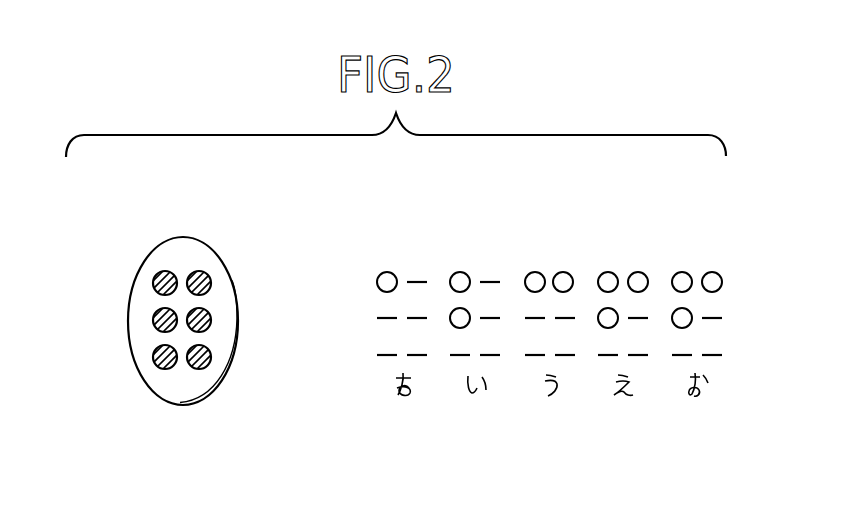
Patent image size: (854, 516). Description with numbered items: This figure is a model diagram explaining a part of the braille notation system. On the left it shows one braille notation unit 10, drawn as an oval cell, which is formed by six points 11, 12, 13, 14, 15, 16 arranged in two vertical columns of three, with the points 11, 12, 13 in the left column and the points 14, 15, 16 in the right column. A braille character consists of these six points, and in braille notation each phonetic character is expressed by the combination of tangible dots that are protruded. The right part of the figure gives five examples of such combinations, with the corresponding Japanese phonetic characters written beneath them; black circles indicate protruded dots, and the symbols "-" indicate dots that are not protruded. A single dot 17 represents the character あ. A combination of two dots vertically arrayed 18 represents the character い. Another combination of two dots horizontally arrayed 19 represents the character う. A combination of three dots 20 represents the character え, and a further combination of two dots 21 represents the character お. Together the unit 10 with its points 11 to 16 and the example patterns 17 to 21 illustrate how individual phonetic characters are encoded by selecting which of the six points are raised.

The braille notation unit 10 is at (185, 236).
The point 11 is at (153, 283).
The point 12 is at (153, 320).
The point 13 is at (153, 357).
The point 14 is at (211, 283).
The point 15 is at (211, 320).
The point 16 is at (211, 357).
The single dot 17 is at (404, 268).
The combination of two dots vertically arrayed 18 is at (477, 268).
The combination of two dots horizontally arrayed 19 is at (550, 268).
The combination of three dots 20 is at (624, 268).
The combination of two dots 21 is at (697, 268).